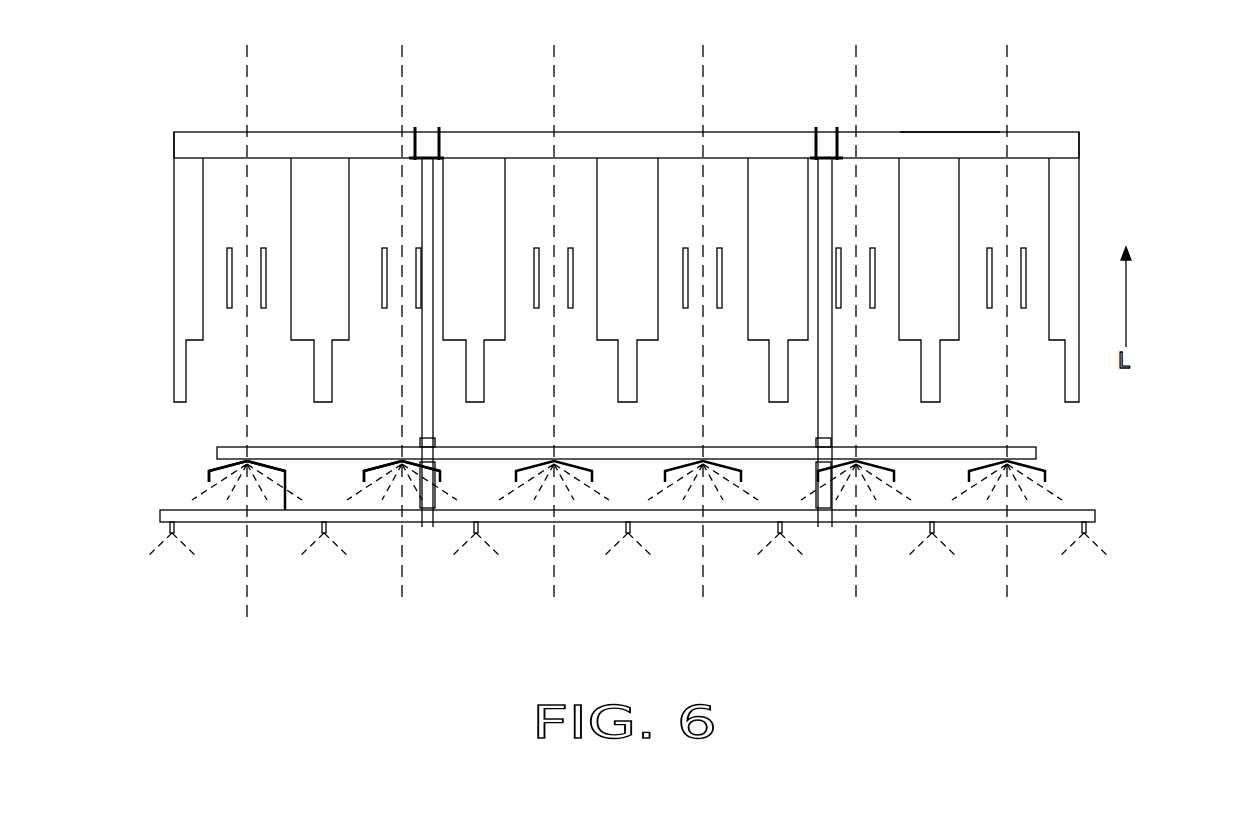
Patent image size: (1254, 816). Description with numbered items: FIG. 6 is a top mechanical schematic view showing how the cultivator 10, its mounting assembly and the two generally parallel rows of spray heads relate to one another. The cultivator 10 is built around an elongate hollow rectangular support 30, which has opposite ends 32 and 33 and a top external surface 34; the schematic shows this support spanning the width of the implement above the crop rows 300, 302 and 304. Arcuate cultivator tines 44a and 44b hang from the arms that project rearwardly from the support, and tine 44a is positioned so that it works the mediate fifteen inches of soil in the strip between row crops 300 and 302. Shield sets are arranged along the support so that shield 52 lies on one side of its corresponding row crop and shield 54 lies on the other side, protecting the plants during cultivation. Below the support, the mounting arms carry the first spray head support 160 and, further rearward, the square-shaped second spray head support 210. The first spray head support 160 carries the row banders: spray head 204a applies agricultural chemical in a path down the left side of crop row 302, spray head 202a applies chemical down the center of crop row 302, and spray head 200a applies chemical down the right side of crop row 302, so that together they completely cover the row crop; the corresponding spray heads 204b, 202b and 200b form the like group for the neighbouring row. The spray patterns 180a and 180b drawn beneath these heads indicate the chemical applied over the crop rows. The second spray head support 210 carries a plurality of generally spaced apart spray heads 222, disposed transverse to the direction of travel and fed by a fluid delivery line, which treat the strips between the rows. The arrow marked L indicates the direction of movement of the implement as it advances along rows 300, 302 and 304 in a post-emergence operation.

The cultivator 10 is at (1103, 192).
The elongate hollow rectangular support 30 is at (598, 143).
The end of elongate support 32 is at (174, 135).
The end of elongate support 33 is at (1079, 143).
The top external surface 34 is at (933, 143).
The shield 52 is at (383, 265).
The shield 54 is at (419, 280).
The cultivator tine 44a is at (316, 396).
The cultivator tine 44b is at (482, 394).
The first spray head support 160 is at (1036, 450).
The second spray head support 210 is at (1095, 515).
The spray head 200a is at (285, 522).
The spray head 200b is at (440, 472).
The spray head 202a is at (243, 463).
The spray head 202b is at (395, 462).
The spray head 204a is at (208, 479).
The spray head 204b is at (362, 472).
The spray pattern 180a is at (238, 496).
The spray pattern 180b is at (392, 494).
The spray head 222 is at (477, 533).
The row crop 300 is at (247, 617).
The row crop 302 is at (402, 600).
The centerline 304 is at (554, 598).